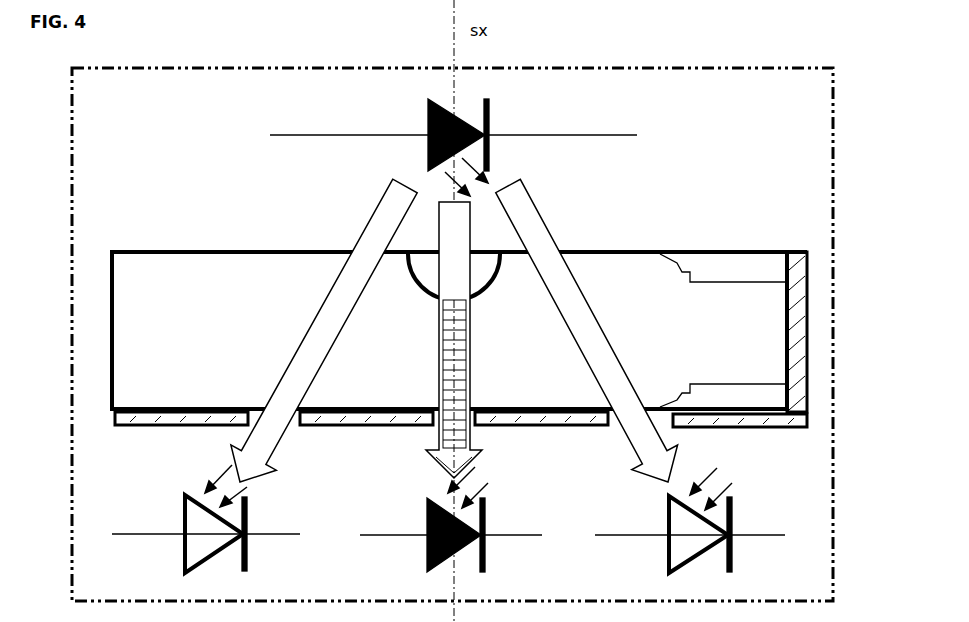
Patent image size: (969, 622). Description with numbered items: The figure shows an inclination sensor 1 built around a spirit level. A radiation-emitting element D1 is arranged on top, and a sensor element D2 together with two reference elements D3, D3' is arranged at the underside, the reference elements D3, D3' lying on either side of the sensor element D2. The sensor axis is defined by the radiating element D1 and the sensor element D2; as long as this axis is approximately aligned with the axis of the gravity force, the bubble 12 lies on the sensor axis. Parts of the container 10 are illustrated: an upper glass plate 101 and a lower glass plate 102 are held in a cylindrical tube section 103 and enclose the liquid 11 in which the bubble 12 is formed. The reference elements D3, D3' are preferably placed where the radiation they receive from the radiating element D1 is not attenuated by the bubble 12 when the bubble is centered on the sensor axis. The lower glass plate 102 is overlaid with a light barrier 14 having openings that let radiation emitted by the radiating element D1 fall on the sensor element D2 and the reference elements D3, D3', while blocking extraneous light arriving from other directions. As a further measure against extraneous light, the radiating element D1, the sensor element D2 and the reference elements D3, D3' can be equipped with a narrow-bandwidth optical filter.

The inclination sensor 1 is at (452, 334).
The container 10 is at (161, 200).
The liquid 11 is at (211, 258).
The bubble 12 is at (427, 260).
The light barrier 14 is at (158, 418).
The upper glass plate 101 is at (728, 250).
The lower glass plate 102 is at (727, 400).
The cylindrical tube section 103 is at (810, 333).
The radiation-emitting element D1 is at (453, 125).
The sensor element D2 is at (451, 535).
The reference element D3 is at (206, 534).
The reference element D3' is at (690, 534).